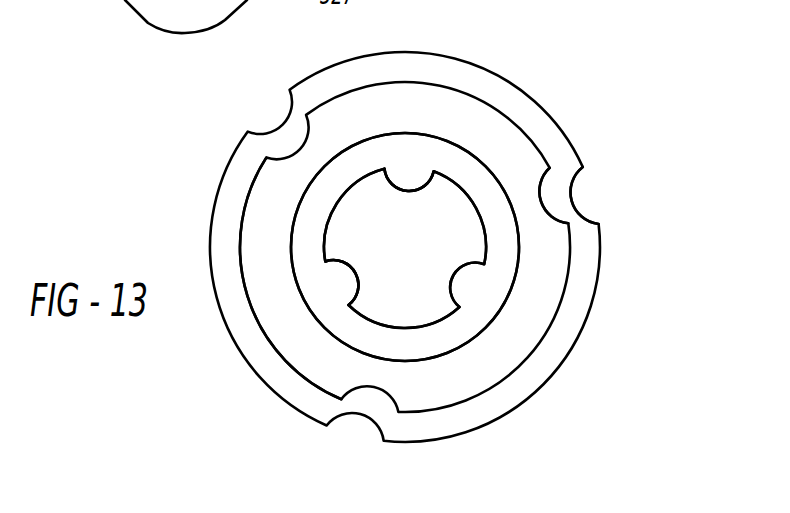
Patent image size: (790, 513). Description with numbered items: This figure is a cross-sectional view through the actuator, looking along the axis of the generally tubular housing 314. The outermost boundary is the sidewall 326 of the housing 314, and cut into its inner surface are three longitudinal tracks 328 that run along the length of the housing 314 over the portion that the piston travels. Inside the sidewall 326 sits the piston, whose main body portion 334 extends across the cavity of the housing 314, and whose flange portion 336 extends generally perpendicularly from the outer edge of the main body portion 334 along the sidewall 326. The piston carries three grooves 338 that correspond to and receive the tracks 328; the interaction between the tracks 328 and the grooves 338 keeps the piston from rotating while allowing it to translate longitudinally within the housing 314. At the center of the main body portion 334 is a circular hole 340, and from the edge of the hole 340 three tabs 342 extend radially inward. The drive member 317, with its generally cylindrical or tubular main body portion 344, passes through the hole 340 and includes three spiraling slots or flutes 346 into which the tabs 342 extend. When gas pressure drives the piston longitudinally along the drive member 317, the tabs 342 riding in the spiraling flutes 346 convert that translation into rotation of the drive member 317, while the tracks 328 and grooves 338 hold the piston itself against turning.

The housing 314 is at (453, 62).
The sidewall 326 is at (510, 95).
The circular hole 340 is at (472, 195).
The drive member 317 is at (427, 252).
The main body portion 344 is at (370, 223).
The tabs 342 is at (343, 272).
The spiraling slots or flutes 346 is at (410, 192).
The longitudinal tracks 328 is at (560, 183).
The grooves 338 is at (553, 220).
The main body portion 334 is at (455, 335).
The flange portion 336 is at (450, 380).